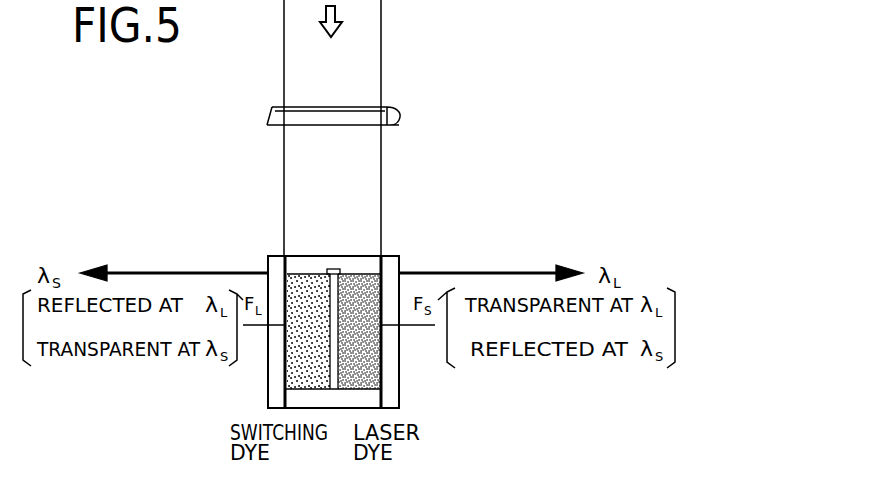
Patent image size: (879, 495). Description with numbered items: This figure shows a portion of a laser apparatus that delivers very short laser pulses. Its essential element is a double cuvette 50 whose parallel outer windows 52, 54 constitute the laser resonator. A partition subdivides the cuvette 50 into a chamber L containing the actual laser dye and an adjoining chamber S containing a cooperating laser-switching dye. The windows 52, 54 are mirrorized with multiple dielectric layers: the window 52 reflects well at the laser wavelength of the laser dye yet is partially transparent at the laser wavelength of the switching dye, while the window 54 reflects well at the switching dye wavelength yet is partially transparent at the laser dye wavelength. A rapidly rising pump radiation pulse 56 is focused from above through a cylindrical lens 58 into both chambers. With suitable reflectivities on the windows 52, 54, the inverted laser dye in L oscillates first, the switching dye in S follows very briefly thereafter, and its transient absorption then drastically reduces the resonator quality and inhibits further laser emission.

The double cuvette 50 is at (321, 344).
The outer window 52 is at (285, 364).
The outer window 54 is at (381, 375).
The pump radiation pulse 56 is at (363, 71).
The cylindrical lens 58 is at (395, 117).